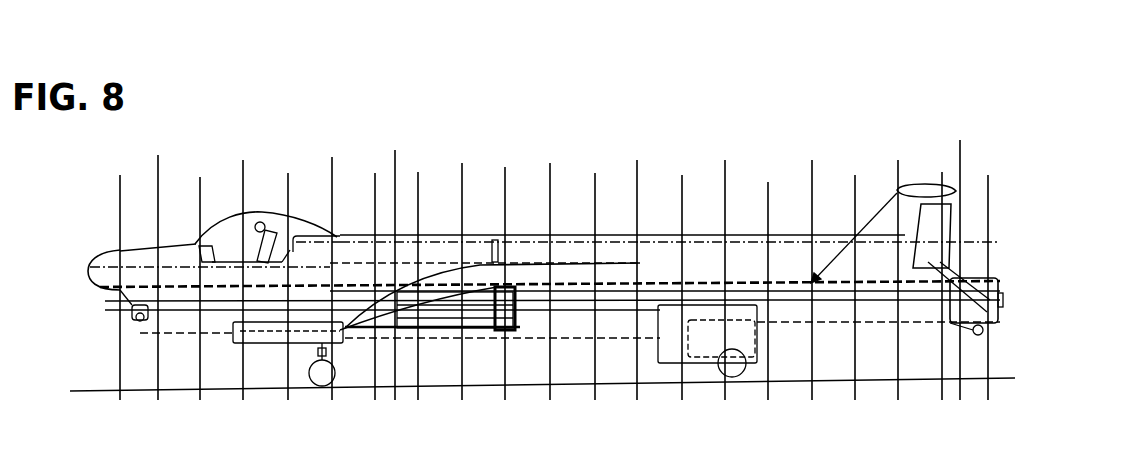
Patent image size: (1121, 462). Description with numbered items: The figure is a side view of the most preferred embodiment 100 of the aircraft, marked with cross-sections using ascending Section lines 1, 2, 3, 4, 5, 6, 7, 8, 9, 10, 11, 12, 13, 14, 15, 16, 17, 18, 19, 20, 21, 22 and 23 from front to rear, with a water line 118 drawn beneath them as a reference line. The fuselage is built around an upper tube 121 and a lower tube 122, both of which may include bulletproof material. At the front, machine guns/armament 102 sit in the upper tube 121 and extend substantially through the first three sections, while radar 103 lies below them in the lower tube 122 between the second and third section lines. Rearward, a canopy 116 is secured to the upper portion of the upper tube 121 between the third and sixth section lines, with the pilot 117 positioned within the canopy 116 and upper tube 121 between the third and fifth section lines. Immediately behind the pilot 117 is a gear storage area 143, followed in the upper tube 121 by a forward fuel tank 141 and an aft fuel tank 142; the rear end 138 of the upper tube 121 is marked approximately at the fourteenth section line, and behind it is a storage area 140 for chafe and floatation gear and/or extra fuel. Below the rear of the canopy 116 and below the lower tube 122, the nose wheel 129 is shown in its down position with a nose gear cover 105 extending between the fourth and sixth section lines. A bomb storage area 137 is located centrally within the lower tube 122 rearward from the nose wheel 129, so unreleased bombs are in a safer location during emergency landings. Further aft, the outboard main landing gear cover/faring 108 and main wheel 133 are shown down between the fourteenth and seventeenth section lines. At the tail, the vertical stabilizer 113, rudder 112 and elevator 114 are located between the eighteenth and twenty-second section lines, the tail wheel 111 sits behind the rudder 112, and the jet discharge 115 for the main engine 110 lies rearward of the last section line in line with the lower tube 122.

The Section line 1 is at (120, 272).
The Section line 2 is at (158, 262).
The Section line 3 is at (197, 273).
The Section line 4 is at (243, 265).
The Section line 5 is at (289, 271).
The Section line 6 is at (331, 262).
The Section line 7 is at (371, 271).
The Section line 8 is at (396, 261).
The Section line 9 is at (417, 271).
The Section line 10 is at (462, 262).
The Section line 11 is at (501, 270).
The Section line 12 is at (551, 263).
The Section line 13 is at (591, 271).
The Section line 14 is at (635, 266).
The Section line 15 is at (673, 273).
The Section line 16 is at (721, 266).
The Section line 17 is at (767, 273).
The Section line 18 is at (817, 266).
The Section line 19 is at (857, 273).
The Section line 20 is at (896, 266).
The Section line 21 is at (940, 272).
The Section line 22 is at (965, 256).
The Section line 23 is at (1000, 273).
The most preferred embodiment 100 is at (839, 79).
The machine guns/armament 102 is at (93, 288).
The radar 103 is at (116, 369).
The nose gear cover 105 is at (268, 340).
The outboard main landing gear cover/faring 108 is at (670, 353).
The main engine 110 is at (887, 308).
The tail wheel 111 is at (977, 346).
The rudder 112 is at (988, 281).
The vertical stabilizer 113 is at (890, 237).
The elevator 114 is at (960, 195).
The jet discharge 115 is at (1005, 312).
The canopy 116 is at (300, 222).
The pilot 117 is at (261, 222).
The water line 118 is at (443, 389).
The upper tube 121 is at (120, 252).
The lower tube 122 is at (190, 325).
The nose wheel 129 is at (330, 393).
The main wheel 133 is at (732, 383).
The bomb storage area 137 is at (465, 322).
The rear end of upper tube 138 is at (629, 257).
The storage area 140 is at (733, 240).
The forward fuel tank 141 is at (424, 231).
The aft fuel tank 142 is at (535, 250).
The gear storage area 143 is at (337, 234).